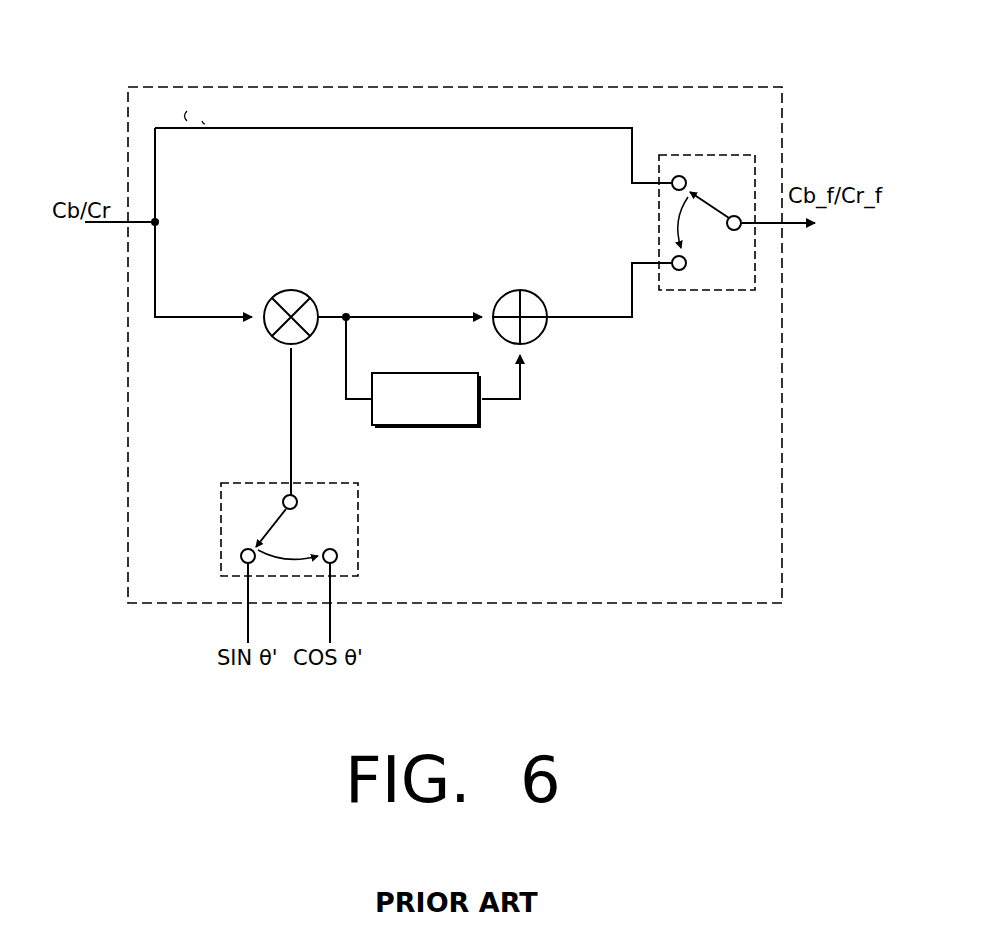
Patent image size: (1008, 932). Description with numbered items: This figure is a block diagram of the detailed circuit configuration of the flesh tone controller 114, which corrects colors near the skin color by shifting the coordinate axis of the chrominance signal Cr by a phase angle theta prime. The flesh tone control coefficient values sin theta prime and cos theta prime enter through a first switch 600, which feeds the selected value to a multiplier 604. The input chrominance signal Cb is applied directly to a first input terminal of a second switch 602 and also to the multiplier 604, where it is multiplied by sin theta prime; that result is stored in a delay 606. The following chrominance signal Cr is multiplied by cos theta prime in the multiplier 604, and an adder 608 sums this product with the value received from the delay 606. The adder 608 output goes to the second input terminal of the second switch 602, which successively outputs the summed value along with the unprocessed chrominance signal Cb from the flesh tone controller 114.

The flesh tone controller 114 is at (534, 87).
The first switch 600 is at (358, 522).
The second switch 602 is at (711, 155).
The multiplier 604 is at (305, 294).
The delay 606 is at (400, 373).
The adder 608 is at (535, 294).